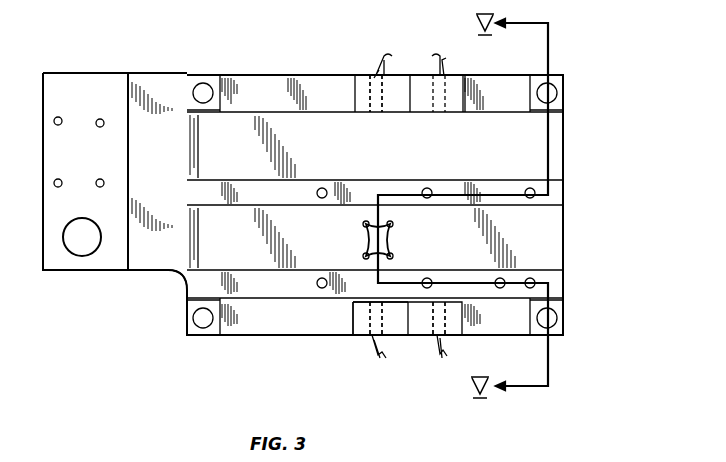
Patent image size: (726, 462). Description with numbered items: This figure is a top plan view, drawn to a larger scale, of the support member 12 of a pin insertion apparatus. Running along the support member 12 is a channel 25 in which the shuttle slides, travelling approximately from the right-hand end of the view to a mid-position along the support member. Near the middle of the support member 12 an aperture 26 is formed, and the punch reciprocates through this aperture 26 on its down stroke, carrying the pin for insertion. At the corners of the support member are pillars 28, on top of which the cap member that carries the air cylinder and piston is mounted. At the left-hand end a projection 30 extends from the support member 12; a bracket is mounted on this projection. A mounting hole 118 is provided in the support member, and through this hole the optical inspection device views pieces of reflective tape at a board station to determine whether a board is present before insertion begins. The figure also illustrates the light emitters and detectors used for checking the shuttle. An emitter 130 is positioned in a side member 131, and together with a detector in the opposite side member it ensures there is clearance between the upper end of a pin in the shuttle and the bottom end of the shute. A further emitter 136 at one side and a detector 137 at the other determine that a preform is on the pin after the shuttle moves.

The support member 12 is at (268, 73).
The channel 25 is at (212, 244).
The aperture 26 is at (366, 235).
The pillars 28 is at (203, 78).
The projection 30 is at (85, 80).
The mounting hole 118 is at (75, 240).
The emitter 130 is at (438, 322).
The side member 131 is at (358, 320).
The emitter 136 is at (372, 322).
The detector 137 is at (448, 75).